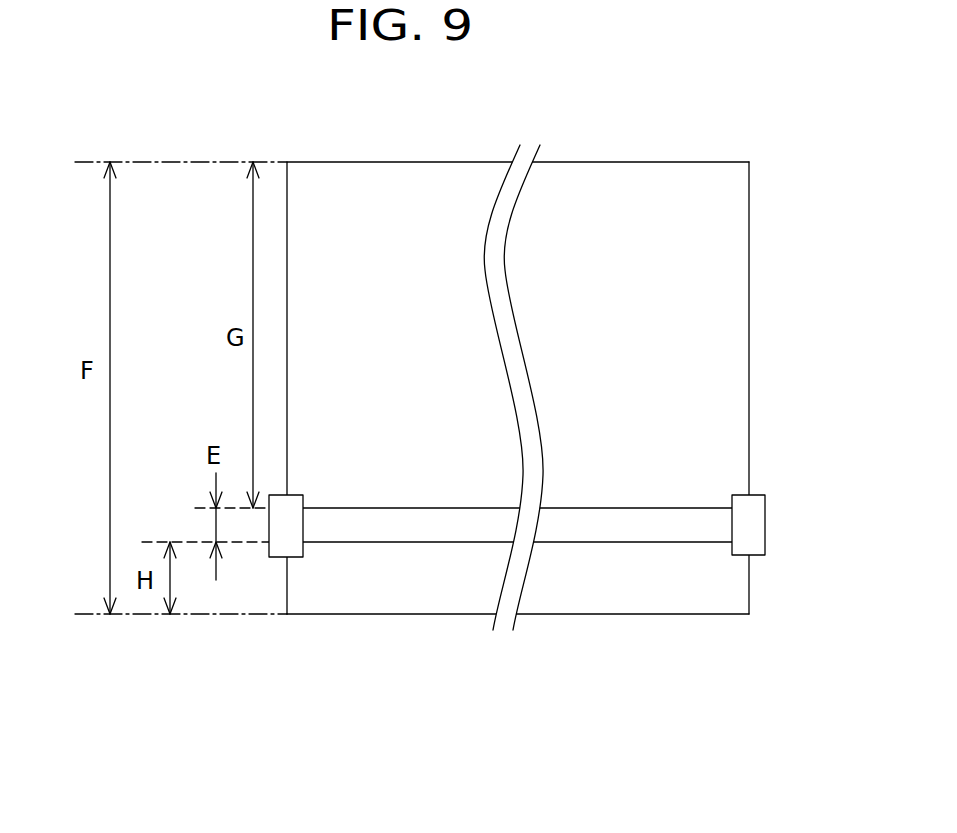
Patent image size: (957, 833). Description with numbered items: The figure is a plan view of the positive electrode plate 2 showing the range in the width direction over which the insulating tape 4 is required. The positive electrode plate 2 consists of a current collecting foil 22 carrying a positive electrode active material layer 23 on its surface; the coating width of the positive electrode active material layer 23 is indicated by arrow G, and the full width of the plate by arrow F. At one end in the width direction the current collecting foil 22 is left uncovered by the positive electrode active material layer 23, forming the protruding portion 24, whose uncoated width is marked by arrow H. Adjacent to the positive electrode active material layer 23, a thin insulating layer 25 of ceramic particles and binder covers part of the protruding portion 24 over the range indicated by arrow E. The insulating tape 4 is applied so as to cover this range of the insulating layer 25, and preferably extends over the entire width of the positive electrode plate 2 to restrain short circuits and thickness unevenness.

The positive electrode plate 2 is at (531, 393).
The positive electrode active material layer 23 is at (730, 256).
The protruding portion 24 is at (518, 613).
The insulating layer 25 is at (412, 525).
The current collecting foil 22 is at (607, 587).
The insulating tape 4 is at (280, 552).